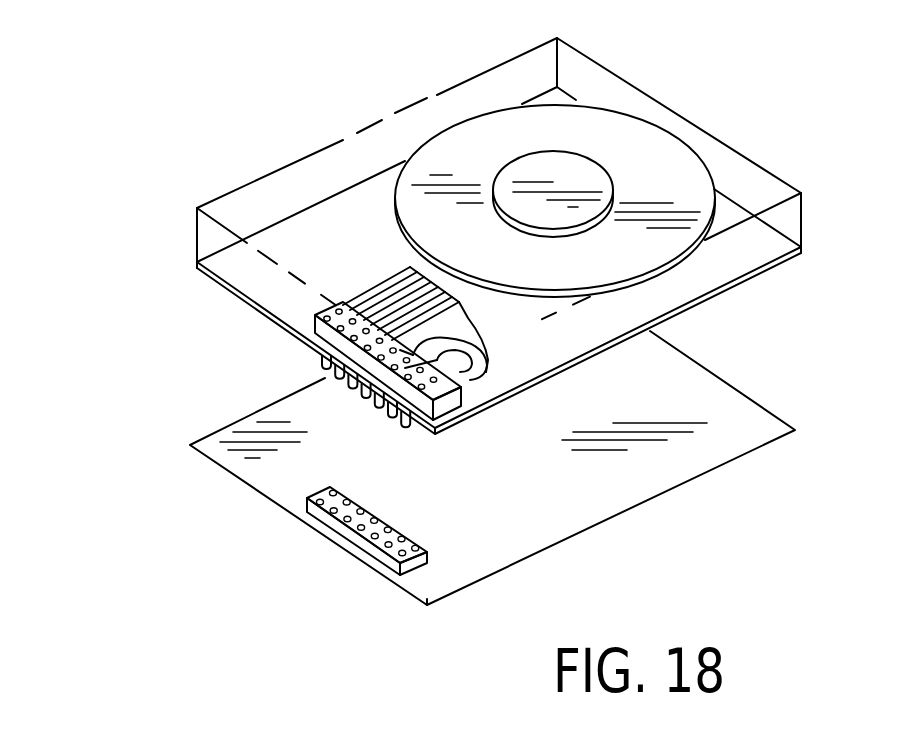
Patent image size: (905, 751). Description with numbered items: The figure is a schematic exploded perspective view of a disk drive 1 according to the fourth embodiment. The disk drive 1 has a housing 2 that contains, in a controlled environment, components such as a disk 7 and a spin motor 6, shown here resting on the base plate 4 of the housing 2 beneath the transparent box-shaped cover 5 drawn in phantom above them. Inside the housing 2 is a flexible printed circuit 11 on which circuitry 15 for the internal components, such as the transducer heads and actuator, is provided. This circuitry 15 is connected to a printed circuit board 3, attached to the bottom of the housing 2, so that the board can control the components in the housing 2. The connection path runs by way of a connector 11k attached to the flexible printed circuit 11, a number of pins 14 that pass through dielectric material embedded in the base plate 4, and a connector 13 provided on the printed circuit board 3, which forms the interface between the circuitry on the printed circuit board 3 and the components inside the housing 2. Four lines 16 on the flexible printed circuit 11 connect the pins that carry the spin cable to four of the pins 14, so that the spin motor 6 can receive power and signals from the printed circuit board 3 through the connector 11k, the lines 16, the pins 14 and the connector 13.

The disk drive 1 is at (430, 314).
The housing 2 is at (430, 236).
The printed circuit board 3 is at (492, 475).
The base plate 4 is at (499, 340).
The cover 5 is at (492, 178).
The spin motor 6 is at (559, 165).
The disk 7 is at (674, 178).
The flexible printed circuit 11 is at (466, 328).
The connector 11k is at (449, 404).
The connector 13 is at (352, 538).
The pins 14 is at (356, 421).
The circuitry 15 is at (393, 290).
The lines 16 is at (481, 362).